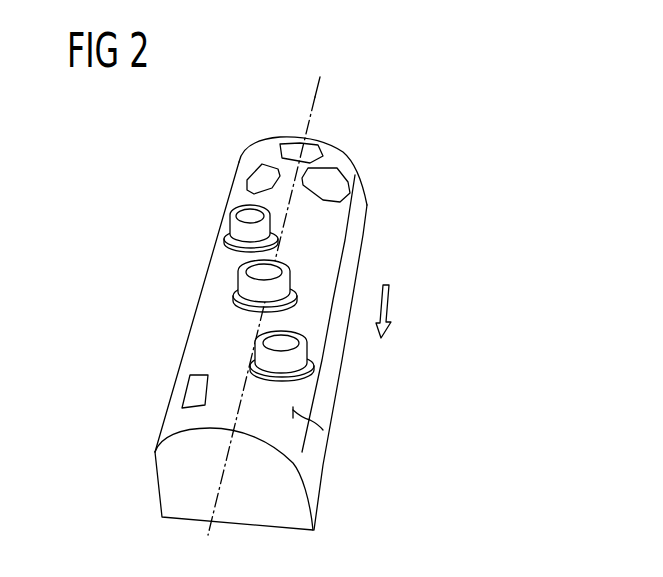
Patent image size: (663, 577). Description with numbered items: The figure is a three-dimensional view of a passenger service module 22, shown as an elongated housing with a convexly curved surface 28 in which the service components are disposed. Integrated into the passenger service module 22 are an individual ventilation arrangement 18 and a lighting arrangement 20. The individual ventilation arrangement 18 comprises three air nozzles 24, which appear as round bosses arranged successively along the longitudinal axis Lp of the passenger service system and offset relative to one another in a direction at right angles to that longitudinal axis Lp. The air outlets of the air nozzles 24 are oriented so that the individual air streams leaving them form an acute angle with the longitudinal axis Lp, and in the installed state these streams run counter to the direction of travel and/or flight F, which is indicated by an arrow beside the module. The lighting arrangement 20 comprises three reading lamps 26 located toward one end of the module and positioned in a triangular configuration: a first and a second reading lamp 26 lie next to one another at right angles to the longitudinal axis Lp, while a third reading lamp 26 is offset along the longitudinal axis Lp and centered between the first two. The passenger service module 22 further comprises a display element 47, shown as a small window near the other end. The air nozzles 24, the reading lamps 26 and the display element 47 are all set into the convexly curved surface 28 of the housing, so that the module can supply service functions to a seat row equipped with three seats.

The individual ventilation arrangement 18 is at (186, 342).
The lighting arrangement 20 is at (236, 128).
The passenger service module 22 is at (394, 179).
The air nozzles 24 is at (298, 336).
The reading lamps 26 is at (283, 145).
The convexly curved surface 28 is at (324, 430).
The display element 47 is at (189, 390).
The longitudinal axis Lp is at (314, 93).
The direction of travel and/or flight F is at (391, 300).